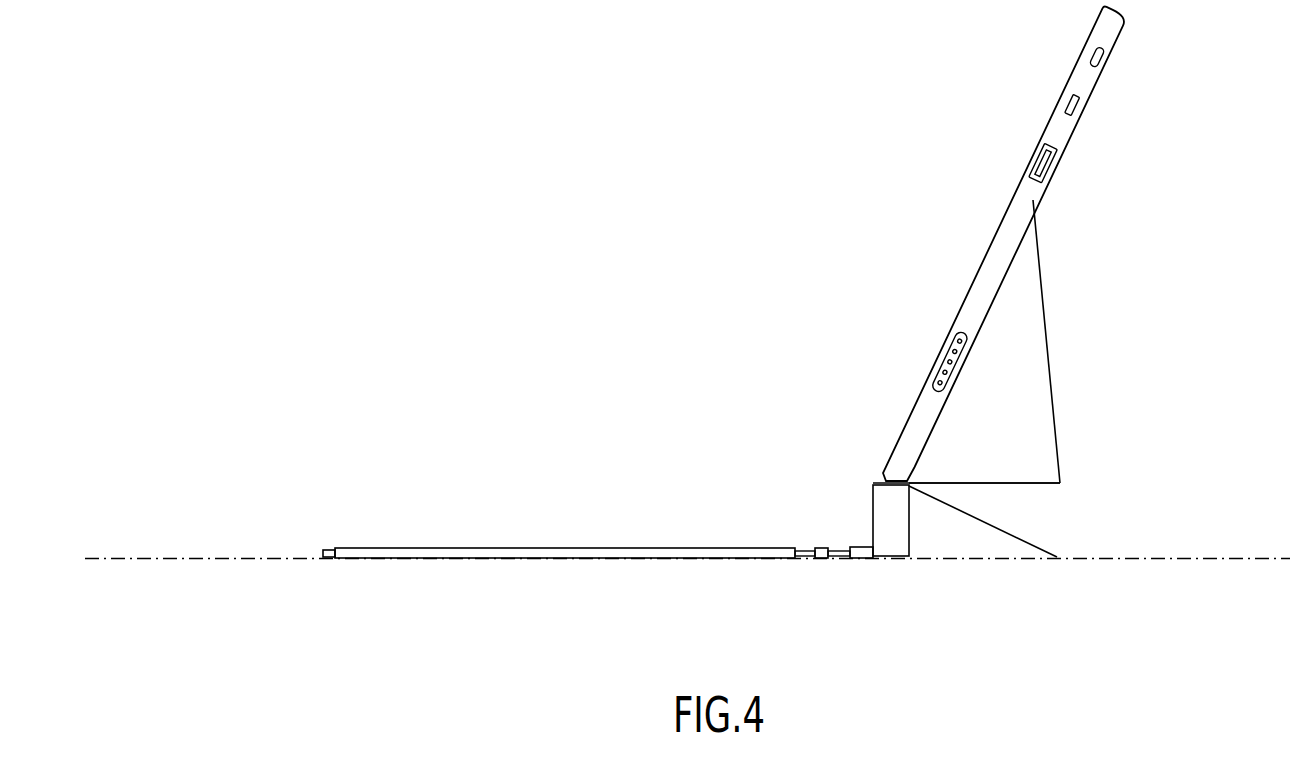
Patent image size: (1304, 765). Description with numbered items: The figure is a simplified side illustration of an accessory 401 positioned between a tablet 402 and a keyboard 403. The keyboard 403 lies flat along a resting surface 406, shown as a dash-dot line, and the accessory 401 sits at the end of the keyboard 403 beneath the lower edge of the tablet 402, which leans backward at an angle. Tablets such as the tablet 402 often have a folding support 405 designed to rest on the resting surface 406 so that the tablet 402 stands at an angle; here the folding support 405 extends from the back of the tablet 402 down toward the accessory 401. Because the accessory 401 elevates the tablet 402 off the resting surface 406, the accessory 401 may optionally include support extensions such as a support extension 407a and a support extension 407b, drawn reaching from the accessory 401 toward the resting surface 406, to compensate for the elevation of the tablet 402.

The accessory 401 is at (913, 532).
The tablet 402 is at (1000, 228).
The keyboard 403 is at (657, 560).
The folding support 405 is at (1047, 335).
The resting surface 406 is at (1115, 556).
The support extension 407a is at (997, 480).
The support extension 407b is at (1045, 548).